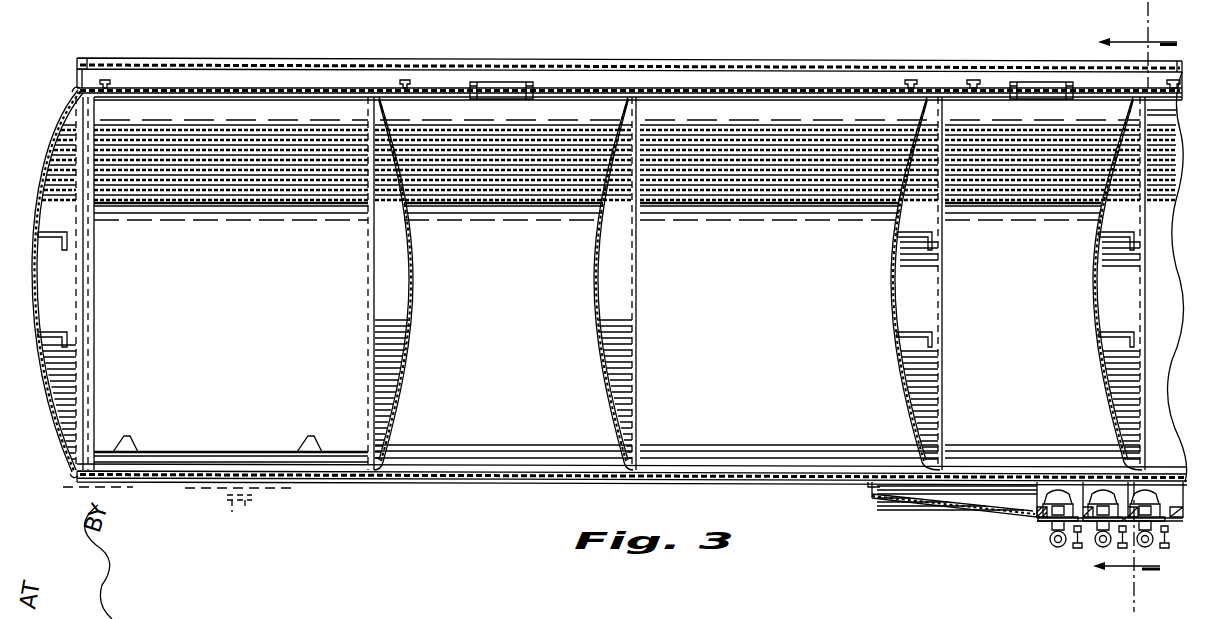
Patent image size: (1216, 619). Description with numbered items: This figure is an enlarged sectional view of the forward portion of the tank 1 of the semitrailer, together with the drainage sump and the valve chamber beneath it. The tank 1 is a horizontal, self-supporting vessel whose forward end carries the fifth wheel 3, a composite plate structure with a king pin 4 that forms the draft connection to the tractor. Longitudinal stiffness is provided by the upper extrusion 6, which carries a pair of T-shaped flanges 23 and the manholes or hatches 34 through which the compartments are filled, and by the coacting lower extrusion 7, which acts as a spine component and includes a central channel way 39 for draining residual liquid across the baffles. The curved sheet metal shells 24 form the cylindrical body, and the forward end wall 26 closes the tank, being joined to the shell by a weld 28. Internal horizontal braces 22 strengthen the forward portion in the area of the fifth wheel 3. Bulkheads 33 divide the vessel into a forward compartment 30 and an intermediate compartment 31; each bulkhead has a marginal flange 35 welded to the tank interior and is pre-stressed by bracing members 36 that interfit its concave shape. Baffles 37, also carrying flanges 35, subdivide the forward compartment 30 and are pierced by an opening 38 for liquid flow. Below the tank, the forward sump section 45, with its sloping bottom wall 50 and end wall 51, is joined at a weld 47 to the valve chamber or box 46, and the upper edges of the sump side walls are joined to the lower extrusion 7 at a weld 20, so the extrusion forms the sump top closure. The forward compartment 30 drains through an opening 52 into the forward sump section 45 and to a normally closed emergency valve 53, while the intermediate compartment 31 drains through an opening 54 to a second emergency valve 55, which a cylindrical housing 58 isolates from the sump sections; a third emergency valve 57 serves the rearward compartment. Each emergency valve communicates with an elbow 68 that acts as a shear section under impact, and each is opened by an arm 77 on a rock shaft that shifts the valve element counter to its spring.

The tank 1 is at (815, 80).
The fifth wheel 3 is at (297, 493).
The king pin 4 is at (235, 512).
The upper extrusion 6 is at (768, 60).
The lower extrusion 7 is at (486, 486).
The weld 20 is at (867, 485).
The internal horizontal braces 22 is at (222, 421).
The flanges 23 is at (203, 67).
The side wall panels or shells 24 is at (231, 242).
The forward end wall 26 is at (50, 135).
The weld 28 is at (73, 85).
The forward compartment 30 is at (712, 118).
The intermediate compartment 31 is at (1021, 118).
The bulkheads 33 is at (896, 236).
The manholes or hatches 34 is at (521, 81).
The marginal flange 35 is at (646, 93).
The bracing members 36 is at (947, 296).
The baffles 37 is at (413, 243).
The opening 38 is at (407, 346).
The central channel way 39 is at (586, 470).
The forward sump section 45 is at (975, 493).
The valve chamber or box 46 is at (1057, 476).
The weld 47 is at (1030, 508).
The bottom wall 50 is at (910, 503).
The end wall 51 is at (873, 492).
The opening 52 is at (904, 470).
The emergency valve 53 is at (1052, 497).
The opening 54 is at (1108, 494).
The emergency valve 55 is at (1133, 470).
The emergency valve 57 is at (1197, 495).
The cylindrical housing 58 is at (1093, 495).
The elbow 68 is at (1052, 530).
The arm 77 is at (1088, 543).